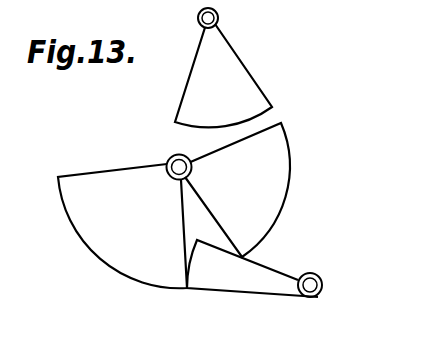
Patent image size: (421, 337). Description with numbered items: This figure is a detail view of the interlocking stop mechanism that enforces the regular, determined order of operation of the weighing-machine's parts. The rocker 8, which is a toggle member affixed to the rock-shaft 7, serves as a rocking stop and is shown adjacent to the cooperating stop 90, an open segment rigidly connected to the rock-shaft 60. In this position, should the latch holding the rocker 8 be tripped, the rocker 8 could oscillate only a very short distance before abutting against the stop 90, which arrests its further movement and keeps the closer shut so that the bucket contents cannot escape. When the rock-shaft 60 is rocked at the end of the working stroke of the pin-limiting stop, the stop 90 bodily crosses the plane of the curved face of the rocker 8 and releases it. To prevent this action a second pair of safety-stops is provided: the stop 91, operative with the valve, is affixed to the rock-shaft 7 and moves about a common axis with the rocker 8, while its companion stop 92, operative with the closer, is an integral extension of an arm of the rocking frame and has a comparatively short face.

The rock-shaft 60 is at (219, 18).
The stop 90 is at (248, 93).
The rock-shaft 7 is at (172, 157).
The rocker 8 is at (272, 188).
The safety-stop 91 is at (87, 183).
The safety-stop 92 is at (262, 275).